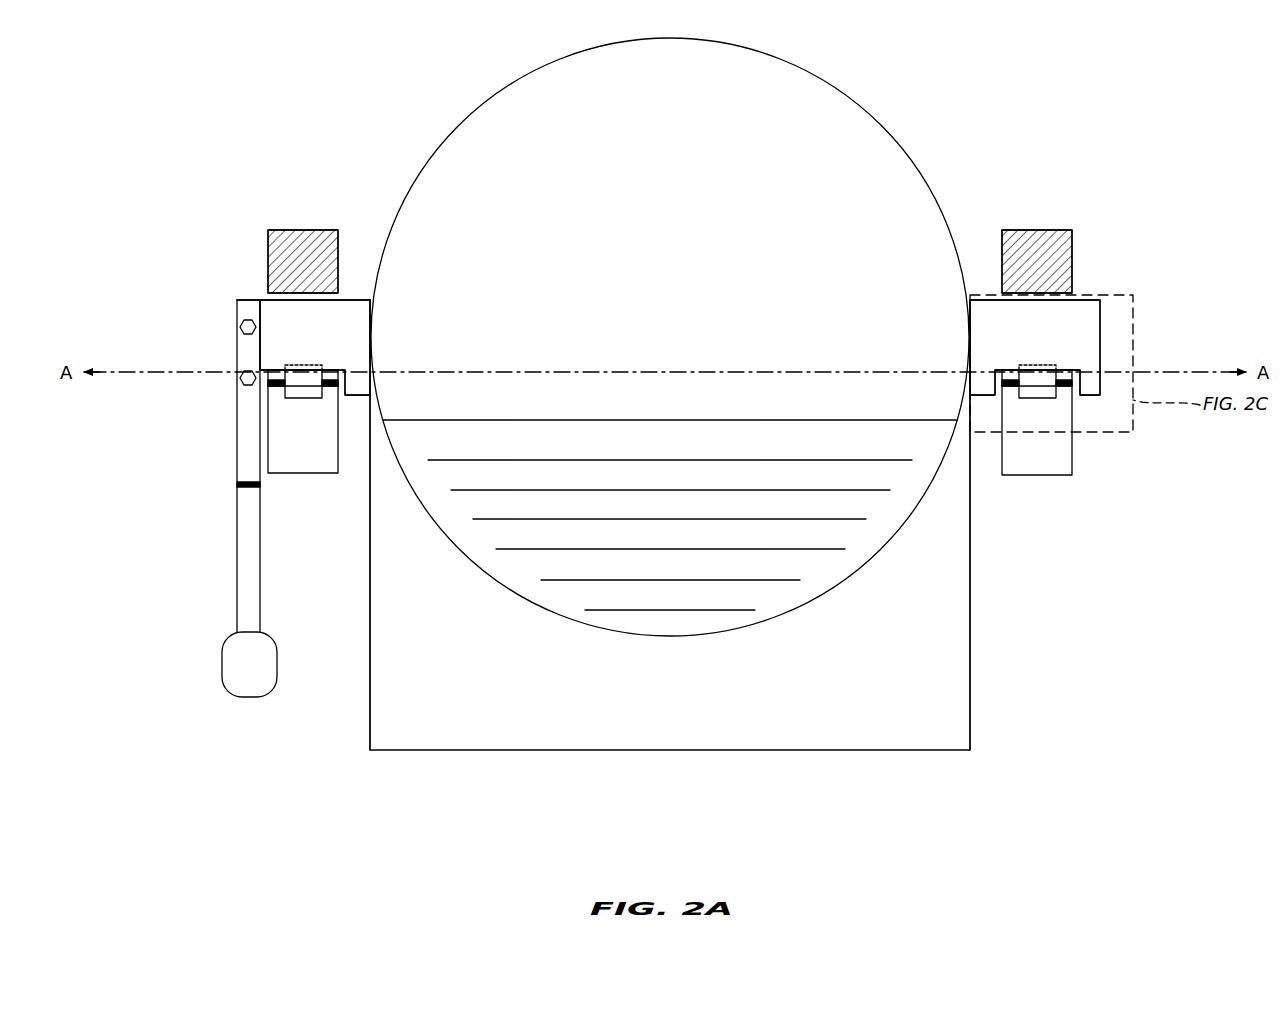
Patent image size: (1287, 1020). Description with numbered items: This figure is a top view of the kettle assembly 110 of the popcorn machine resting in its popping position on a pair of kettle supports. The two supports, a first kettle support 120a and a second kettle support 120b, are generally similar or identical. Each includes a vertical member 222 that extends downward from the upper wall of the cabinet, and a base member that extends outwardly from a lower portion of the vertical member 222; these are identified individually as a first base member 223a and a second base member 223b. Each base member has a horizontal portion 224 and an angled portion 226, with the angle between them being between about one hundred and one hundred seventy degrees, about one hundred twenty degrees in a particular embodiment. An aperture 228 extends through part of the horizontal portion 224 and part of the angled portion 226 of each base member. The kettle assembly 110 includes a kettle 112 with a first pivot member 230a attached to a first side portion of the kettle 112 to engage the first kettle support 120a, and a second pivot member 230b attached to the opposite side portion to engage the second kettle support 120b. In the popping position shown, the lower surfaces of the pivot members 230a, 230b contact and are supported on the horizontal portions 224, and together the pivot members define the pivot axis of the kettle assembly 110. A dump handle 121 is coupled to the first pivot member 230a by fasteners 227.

The kettle assembly 110 is at (420, 108).
The kettle 112 is at (845, 117).
The first kettle support 120a is at (245, 231).
The second kettle support 120b is at (1093, 231).
The dump handle 121 is at (245, 528).
The vertical member 222 is at (268, 243).
The horizontal portion 224 is at (268, 293).
The angled portion 226 is at (302, 473).
The fasteners 227 is at (248, 369).
The aperture 228 is at (287, 400).
The first base member 223a is at (338, 425).
The second base member 223b is at (1000, 425).
The first pivot member 230a is at (360, 313).
The second pivot member 230b is at (973, 305).